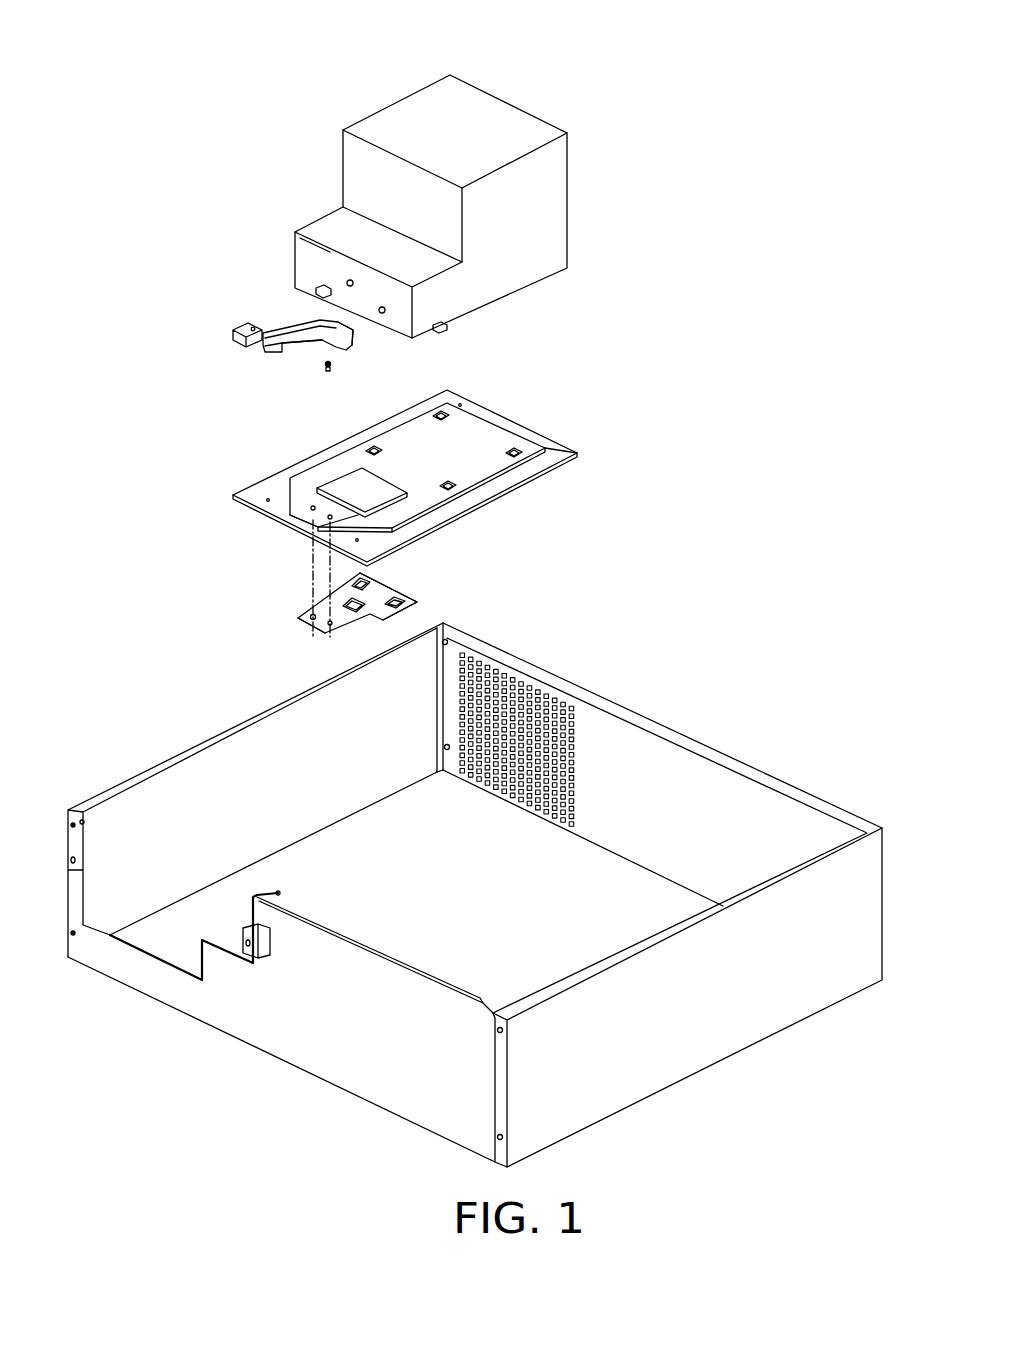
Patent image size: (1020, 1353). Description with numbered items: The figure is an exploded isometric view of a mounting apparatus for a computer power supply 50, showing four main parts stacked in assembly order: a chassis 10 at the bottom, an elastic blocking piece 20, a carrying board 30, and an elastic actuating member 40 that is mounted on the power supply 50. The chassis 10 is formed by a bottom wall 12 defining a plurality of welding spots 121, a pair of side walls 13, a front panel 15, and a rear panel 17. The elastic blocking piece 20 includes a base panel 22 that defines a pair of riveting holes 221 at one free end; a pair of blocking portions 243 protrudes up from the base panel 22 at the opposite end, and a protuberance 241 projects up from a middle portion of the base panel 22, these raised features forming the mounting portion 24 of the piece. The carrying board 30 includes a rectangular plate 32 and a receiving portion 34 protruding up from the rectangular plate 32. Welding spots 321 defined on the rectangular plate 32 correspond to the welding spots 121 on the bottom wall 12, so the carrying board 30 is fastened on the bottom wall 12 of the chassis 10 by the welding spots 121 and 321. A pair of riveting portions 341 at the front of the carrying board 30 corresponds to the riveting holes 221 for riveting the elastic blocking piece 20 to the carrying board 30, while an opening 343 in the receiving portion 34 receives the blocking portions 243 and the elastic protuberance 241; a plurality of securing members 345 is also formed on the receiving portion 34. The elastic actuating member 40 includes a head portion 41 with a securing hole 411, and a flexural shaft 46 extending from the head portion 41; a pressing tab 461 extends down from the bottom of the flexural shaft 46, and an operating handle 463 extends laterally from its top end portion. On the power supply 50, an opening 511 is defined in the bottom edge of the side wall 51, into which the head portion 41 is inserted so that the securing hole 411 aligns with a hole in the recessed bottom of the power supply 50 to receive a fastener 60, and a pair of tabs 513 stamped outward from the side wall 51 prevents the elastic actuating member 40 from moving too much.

The chassis 10 is at (755, 757).
The bottom wall 12 is at (157, 943).
The welding spots 121 is at (463, 902).
The side walls 13 is at (165, 785).
The front panel 15 is at (250, 1018).
The rear panel 17 is at (667, 760).
The elastic blocking piece 20 is at (407, 582).
The base panel 22 is at (308, 627).
The riveting holes 221 is at (310, 617).
The mounting portion 24 is at (400, 607).
The protuberance 241 is at (357, 612).
The blocking portions 243 is at (402, 592).
The carrying board 30 is at (540, 423).
The rectangular plate 32 is at (563, 455).
The welding spots 321 is at (460, 503).
The receiving portion 34 is at (472, 425).
The riveting portions 341 is at (295, 518).
The opening 343 is at (347, 487).
The securing members 345 is at (372, 447).
The elastic actuating member 40 is at (227, 342).
The head portion 41 is at (245, 325).
The securing hole 411 is at (253, 326).
The flexural shaft 46 is at (297, 334).
The pressing tab 461 is at (267, 348).
The operating handle 463 is at (358, 328).
The power supply 50 is at (562, 115).
The side wall 51 is at (310, 243).
The opening 511 is at (318, 288).
The tabs 513 is at (384, 313).
The fastener 60 is at (325, 369).